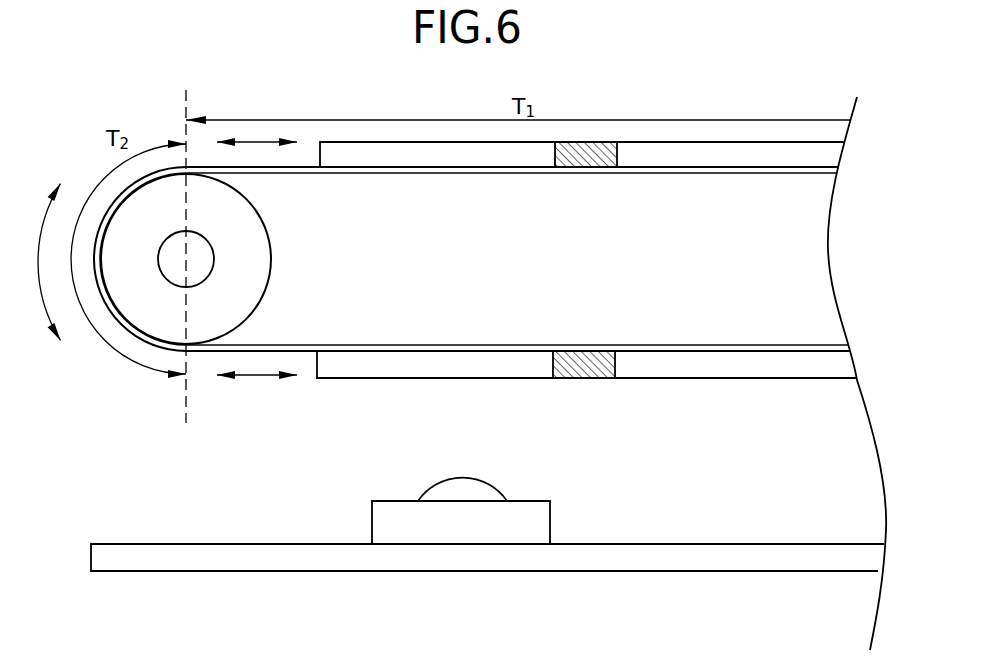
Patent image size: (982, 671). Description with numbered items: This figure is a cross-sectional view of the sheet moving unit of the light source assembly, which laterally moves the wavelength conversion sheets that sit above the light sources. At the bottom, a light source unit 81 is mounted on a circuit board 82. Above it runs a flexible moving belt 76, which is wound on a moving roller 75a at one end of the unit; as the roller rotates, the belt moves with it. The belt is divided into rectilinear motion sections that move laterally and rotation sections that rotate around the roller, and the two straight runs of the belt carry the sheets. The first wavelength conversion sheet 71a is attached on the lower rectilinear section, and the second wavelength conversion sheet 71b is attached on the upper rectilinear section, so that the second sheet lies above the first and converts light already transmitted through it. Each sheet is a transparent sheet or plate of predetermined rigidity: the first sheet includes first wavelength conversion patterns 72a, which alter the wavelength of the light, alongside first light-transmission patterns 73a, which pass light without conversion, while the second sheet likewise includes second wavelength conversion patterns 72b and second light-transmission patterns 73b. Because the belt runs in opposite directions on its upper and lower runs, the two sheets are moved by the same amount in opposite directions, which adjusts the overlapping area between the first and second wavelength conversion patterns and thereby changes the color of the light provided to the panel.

The first wavelength conversion sheet 71a is at (587, 426).
The second wavelength conversion sheet 71b is at (582, 219).
The first wavelength conversion patterns 72a is at (588, 378).
The second wavelength conversion patterns 72b is at (591, 168).
The first light-transmission patterns 73a is at (667, 361).
The second light-transmission patterns 73b is at (668, 155).
The moving roller 75a is at (140, 305).
The moving belt 76 is at (313, 355).
The light source unit 81 is at (378, 514).
The circuit board 82 is at (415, 550).